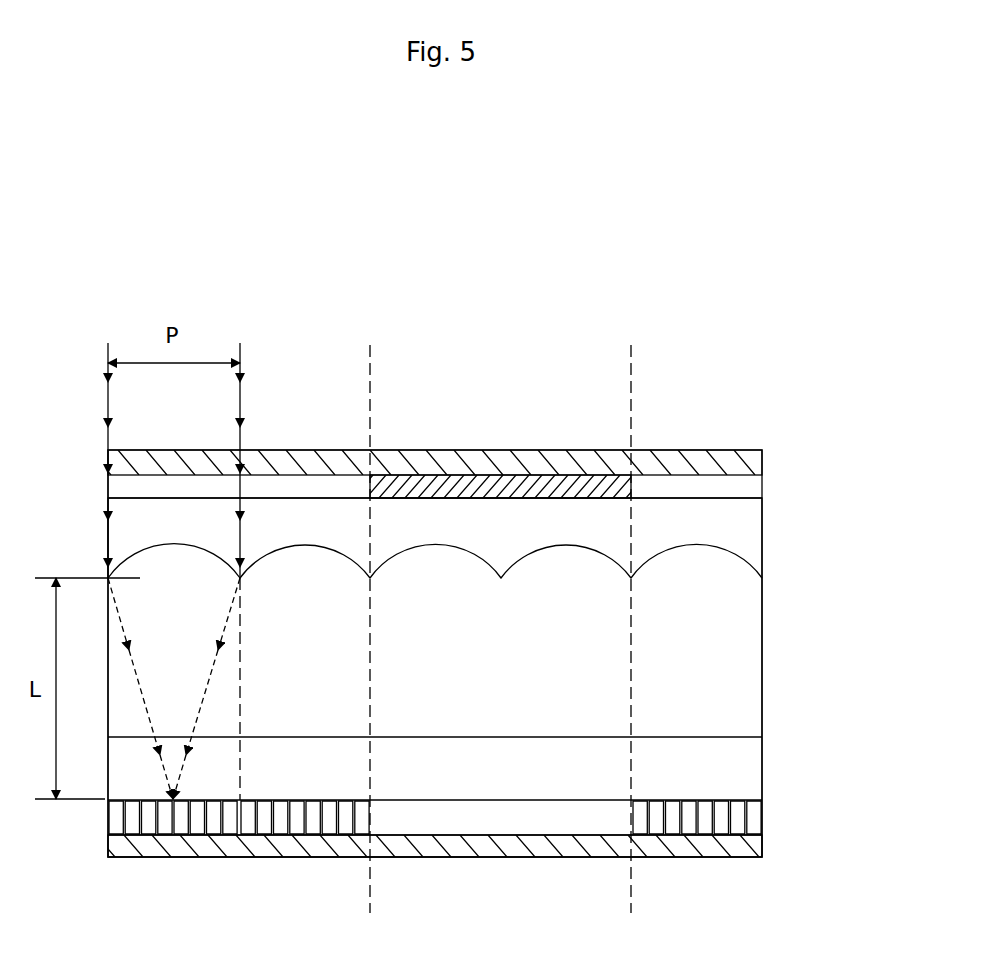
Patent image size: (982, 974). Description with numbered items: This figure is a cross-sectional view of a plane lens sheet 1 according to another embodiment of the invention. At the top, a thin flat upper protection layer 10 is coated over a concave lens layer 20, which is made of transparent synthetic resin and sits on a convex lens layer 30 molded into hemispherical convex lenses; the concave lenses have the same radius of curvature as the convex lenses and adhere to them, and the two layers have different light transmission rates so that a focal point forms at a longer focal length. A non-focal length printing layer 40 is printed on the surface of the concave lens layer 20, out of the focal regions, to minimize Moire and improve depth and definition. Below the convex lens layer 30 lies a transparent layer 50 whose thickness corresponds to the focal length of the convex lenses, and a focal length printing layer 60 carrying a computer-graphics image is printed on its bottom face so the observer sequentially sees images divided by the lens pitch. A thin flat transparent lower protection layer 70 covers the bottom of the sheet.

The plane lens sheet 1 is at (270, 255).
The upper protection layer 10 is at (750, 465).
The concave lens layer 20 is at (740, 527).
The convex lens layer 30 is at (707, 649).
The non-focal length printing layer 40 is at (523, 485).
The transparent layer 50 is at (707, 776).
The focal length printing layer 60 is at (758, 819).
The lower protection layer 70 is at (712, 845).